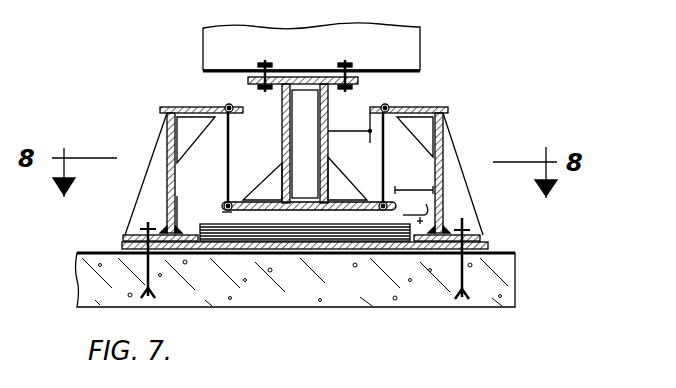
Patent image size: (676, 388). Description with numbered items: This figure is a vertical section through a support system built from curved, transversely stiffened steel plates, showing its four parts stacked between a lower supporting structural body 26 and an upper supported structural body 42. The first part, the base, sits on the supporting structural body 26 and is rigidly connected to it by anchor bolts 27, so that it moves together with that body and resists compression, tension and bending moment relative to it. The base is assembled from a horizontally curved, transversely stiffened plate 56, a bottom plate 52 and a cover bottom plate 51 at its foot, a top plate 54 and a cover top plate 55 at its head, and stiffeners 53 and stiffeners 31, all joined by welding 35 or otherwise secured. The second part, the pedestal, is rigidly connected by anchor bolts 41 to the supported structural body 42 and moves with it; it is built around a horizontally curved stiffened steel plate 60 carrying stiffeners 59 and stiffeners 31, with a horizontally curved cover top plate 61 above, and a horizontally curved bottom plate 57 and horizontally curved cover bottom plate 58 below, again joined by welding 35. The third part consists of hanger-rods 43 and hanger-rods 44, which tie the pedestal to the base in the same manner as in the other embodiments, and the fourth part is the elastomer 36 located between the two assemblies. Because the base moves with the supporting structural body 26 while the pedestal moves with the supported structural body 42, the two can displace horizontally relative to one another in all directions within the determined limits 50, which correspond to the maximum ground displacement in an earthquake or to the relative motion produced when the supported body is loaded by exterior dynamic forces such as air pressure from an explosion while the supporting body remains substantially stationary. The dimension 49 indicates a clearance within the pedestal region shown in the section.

The supporting structural body 26 is at (366, 258).
The anchor bolts 27 is at (152, 279).
The stiffeners 31 is at (210, 122).
The welding 35 is at (398, 108).
The elastomer 36 is at (330, 228).
The anchor bolts 41 is at (270, 66).
The supported structural body 42 is at (387, 70).
The hanger-rods 43 is at (226, 199).
The hanger-rods 44 is at (232, 169).
The clearance gap 49 is at (415, 209).
The horizontal movement limits 50 is at (380, 153).
The cover bottom plate 51 is at (122, 246).
The bottom plate 52 is at (126, 235).
The stiffeners 53 is at (140, 190).
The top plate 54 is at (167, 109).
The cover top plate 55 is at (226, 106).
The horizontally curved, transversely stiffened plate 56 is at (176, 200).
The horizontally curved bottom plate 57 is at (223, 204).
The horizontally curved cover bottom plate 58 is at (222, 214).
The stiffeners 59 is at (293, 166).
The horizontally curved stiffened steel plate 60 is at (328, 148).
The horizontally curved cover top plate 61 is at (357, 80).